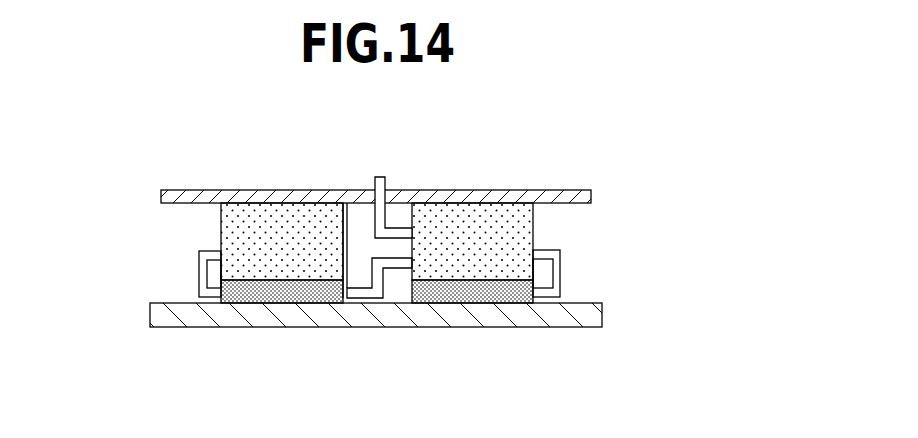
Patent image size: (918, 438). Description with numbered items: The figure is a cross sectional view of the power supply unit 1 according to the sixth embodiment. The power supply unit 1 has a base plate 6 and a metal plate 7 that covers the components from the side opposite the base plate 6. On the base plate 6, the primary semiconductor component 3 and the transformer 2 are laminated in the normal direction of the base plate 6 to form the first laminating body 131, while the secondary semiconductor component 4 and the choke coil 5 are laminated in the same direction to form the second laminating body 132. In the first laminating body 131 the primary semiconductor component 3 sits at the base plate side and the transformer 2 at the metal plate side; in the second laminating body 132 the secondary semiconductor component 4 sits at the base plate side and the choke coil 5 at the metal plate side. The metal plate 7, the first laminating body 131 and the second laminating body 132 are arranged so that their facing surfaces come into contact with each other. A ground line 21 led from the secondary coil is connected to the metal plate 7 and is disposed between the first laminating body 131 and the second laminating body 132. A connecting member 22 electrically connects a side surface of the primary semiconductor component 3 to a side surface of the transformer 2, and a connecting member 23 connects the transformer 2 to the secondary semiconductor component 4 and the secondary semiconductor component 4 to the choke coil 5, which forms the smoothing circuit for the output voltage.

The power supply unit 1 is at (598, 146).
The transformer 2 is at (472, 222).
The primary semiconductor component 3 is at (479, 290).
The secondary semiconductor component 4 is at (283, 289).
The choke coil 5 is at (257, 223).
The base plate 6 is at (388, 315).
The metal plate 7 is at (293, 198).
The ground line 21 is at (376, 209).
The connecting member 22 is at (557, 285).
The connecting member 23 is at (204, 283).
The first laminating body 131 is at (503, 198).
The second laminating body 132 is at (225, 195).